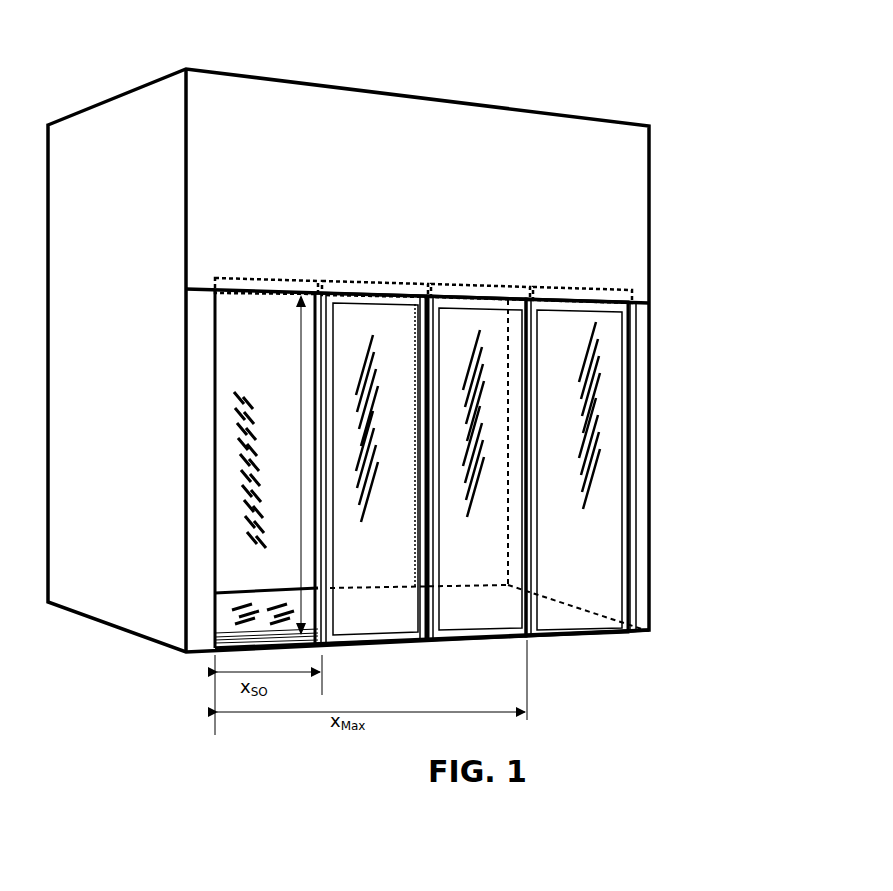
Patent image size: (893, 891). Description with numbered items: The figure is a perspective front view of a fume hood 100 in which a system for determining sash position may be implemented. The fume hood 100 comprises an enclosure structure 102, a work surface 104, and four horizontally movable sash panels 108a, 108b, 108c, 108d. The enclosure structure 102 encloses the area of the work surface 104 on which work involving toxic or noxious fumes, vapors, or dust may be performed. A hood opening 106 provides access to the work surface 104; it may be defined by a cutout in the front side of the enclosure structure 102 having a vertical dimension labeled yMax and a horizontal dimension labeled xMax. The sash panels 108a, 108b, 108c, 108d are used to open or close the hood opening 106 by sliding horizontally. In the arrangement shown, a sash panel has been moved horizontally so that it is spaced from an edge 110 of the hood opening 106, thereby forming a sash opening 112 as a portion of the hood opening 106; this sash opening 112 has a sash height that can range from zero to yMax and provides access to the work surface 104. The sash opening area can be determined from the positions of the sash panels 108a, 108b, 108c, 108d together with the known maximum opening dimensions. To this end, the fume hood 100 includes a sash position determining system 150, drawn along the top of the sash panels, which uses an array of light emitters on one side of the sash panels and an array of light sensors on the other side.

The fume hood 100 is at (483, 70).
The enclosure structure 102 is at (650, 140).
The work surface 104 is at (232, 630).
The hood opening 106 is at (232, 524).
The horizontally movable sash panel 108a is at (413, 600).
The horizontally movable sash panel 108b is at (422, 618).
The horizontally movable sash panel 108c is at (502, 592).
The horizontally movable sash panel 108d is at (603, 588).
The edge 110 is at (218, 363).
The sash opening 112 is at (232, 460).
The sash position determining system 150 is at (537, 280).